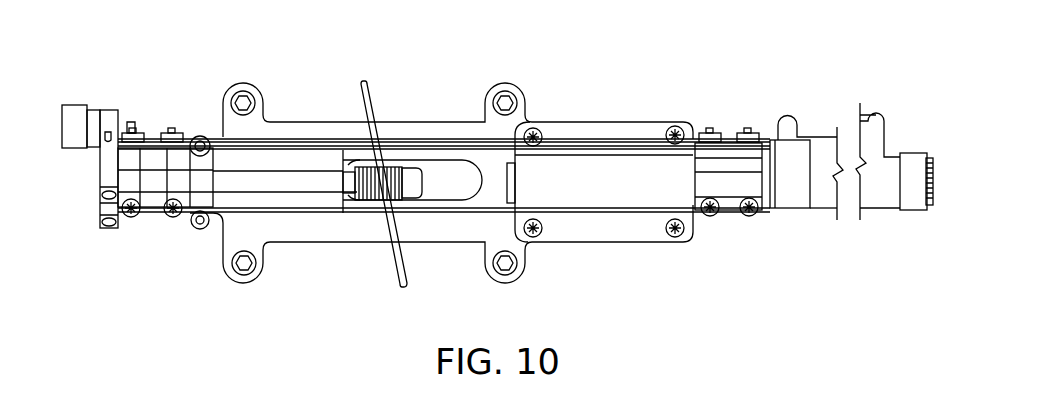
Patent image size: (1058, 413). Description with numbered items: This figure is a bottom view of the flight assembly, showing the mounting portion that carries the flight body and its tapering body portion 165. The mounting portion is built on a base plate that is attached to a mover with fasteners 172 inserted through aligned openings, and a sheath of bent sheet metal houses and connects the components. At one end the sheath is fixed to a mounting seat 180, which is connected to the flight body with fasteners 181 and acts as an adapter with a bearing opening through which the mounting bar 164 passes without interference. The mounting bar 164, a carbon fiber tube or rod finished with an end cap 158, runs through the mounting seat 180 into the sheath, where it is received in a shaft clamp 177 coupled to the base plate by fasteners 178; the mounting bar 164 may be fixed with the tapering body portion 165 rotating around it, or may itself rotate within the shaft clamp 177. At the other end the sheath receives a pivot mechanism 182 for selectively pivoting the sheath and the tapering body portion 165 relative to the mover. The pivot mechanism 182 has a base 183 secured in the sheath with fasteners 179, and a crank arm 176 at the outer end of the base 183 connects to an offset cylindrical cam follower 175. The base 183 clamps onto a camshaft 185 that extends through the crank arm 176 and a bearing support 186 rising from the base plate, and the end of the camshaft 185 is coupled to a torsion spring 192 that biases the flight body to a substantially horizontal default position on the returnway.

The end cap 158 is at (913, 198).
The mounting bar 164 is at (930, 177).
The tapering body portion 165 is at (868, 130).
The fasteners 172 is at (245, 92).
The cam follower 175 is at (72, 133).
The crank arm 176 is at (97, 173).
The shaft clamp 177 is at (570, 148).
The fasteners 178 is at (537, 130).
The fasteners 179 is at (168, 134).
The mounting seat 180 is at (757, 158).
The fasteners 181 is at (747, 130).
The pivot mechanism 182 is at (90, 86).
The pivot mechanism base 183 is at (130, 180).
The camshaft 185 is at (320, 183).
The bearing support 186 is at (275, 157).
The torsion spring 192 is at (378, 200).